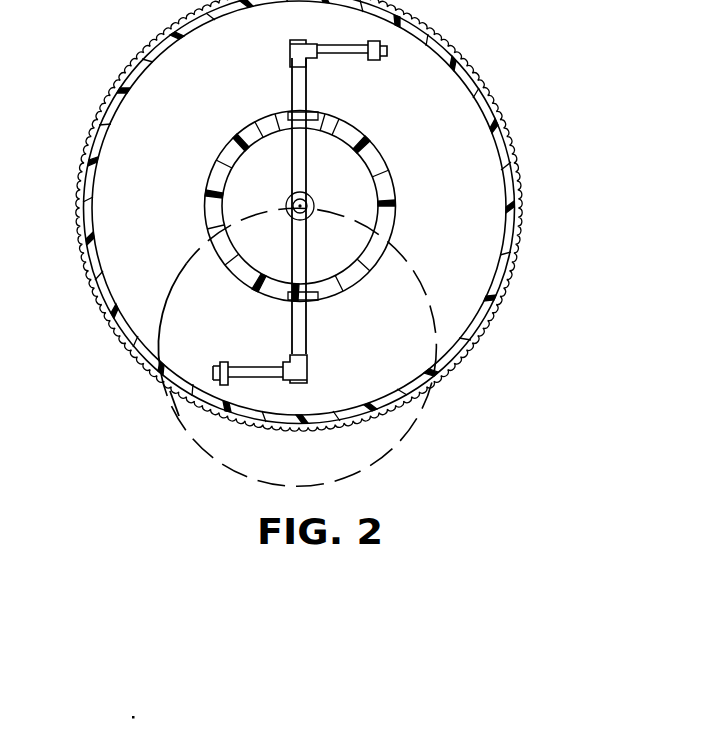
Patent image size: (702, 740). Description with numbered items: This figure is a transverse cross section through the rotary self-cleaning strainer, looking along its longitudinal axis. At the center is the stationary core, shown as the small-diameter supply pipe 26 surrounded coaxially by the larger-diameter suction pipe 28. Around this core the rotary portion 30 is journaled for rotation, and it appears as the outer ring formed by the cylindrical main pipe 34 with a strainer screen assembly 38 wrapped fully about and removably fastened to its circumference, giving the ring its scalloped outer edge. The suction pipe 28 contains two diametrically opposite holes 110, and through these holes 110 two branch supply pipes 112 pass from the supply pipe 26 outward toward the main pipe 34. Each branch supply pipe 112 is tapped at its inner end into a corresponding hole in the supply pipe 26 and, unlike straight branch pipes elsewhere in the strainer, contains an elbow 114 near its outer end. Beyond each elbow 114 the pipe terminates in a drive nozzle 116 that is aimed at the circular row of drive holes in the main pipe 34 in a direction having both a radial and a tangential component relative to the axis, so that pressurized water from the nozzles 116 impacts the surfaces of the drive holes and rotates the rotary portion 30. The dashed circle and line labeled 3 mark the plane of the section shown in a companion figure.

The section line 3- 3 is at (408, 427).
The supply pipe 26 is at (314, 211).
The suction pipe 28 is at (386, 193).
The rotary portion 30 is at (530, 163).
The main pipe 34 is at (517, 202).
The strainer screen assembly 38 is at (128, 58).
The holes 110 is at (322, 112).
The branch supply pipe 112 is at (292, 158).
The elbow 114 is at (290, 47).
The nozzle 116 is at (389, 53).